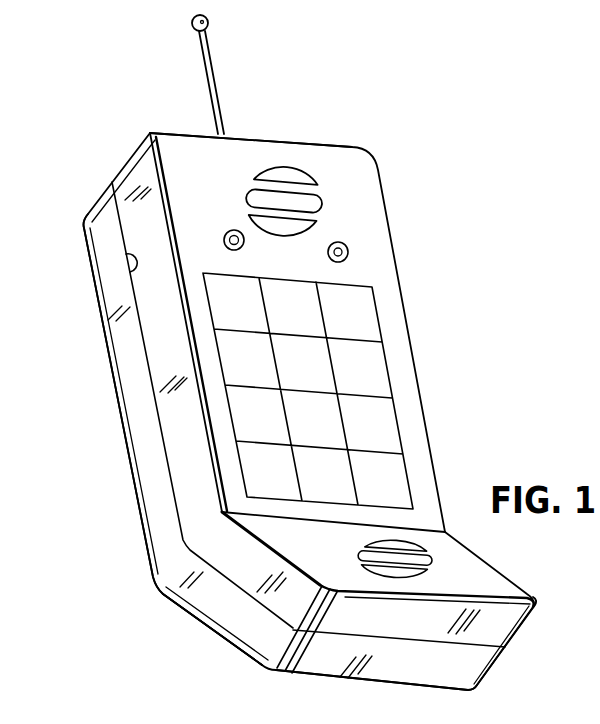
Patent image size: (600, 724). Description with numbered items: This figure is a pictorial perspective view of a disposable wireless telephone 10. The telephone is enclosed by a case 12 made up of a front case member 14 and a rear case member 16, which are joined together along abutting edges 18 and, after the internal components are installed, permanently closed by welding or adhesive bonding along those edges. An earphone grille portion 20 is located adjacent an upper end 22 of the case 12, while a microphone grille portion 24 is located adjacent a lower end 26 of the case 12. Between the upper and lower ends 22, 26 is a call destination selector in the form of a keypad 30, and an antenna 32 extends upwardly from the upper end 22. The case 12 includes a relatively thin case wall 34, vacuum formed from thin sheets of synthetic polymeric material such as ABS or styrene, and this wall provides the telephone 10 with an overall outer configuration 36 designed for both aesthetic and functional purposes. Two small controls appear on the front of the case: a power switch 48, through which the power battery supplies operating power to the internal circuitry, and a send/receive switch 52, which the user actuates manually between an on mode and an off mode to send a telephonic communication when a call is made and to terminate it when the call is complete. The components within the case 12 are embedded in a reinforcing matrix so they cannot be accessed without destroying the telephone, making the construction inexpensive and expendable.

The disposable wireless telephone 10 is at (125, 440).
The case 12 is at (151, 523).
The front case member 14 is at (513, 630).
The rear case member 16 is at (485, 672).
The abutting edges 18 is at (130, 268).
The earphone grille portion 20 is at (287, 167).
The upper end 22 is at (250, 137).
The microphone grille portion 24 is at (430, 562).
The lower end 26 is at (398, 690).
The keypad 30 is at (388, 368).
The antenna 32 is at (208, 65).
The case wall 34 is at (227, 568).
The overall outer configuration 36 is at (378, 222).
The power switch 48 is at (223, 242).
The send/receive switch 52 is at (349, 251).